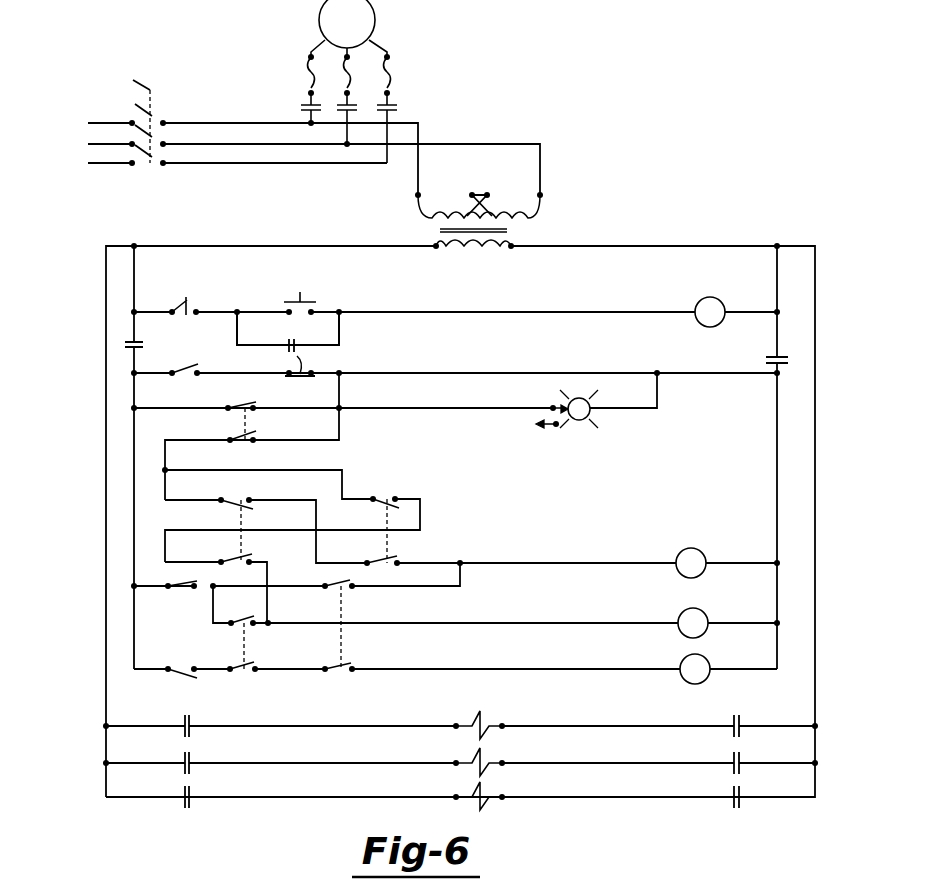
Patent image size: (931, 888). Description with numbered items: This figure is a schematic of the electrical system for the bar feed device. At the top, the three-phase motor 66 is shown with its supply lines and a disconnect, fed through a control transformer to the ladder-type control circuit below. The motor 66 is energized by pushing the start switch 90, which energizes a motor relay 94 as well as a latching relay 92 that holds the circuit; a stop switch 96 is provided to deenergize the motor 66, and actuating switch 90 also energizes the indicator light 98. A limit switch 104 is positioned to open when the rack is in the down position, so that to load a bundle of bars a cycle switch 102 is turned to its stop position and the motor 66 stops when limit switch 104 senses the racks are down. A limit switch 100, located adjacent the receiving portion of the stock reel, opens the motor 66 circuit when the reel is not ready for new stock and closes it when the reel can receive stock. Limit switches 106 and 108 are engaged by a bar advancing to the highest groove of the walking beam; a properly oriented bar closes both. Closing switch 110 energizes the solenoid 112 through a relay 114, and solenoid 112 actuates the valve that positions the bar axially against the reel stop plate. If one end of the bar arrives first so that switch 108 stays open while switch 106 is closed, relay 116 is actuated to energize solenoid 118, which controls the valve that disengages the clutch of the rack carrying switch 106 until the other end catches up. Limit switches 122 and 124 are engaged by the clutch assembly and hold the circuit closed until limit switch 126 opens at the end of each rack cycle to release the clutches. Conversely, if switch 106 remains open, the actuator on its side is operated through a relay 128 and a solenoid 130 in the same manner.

The motor 66 is at (375, 22).
The switch 90 is at (310, 292).
The latching relay 92 is at (721, 301).
The motor relay 94 is at (366, 331).
The stop switch 96 is at (190, 302).
The light 98 is at (572, 426).
The limit switch 100 is at (186, 369).
The cycle switch 102 is at (296, 378).
The limit switch 104 is at (252, 416).
The limit switch 106 is at (263, 478).
The limit switch 108 is at (389, 487).
The switch 110 is at (183, 666).
The solenoid 112 is at (485, 811).
The relay 114 is at (707, 658).
The relay 116 is at (702, 552).
The solenoid 118 is at (483, 712).
The limit switch 122 is at (343, 643).
The limit switch 124 is at (252, 649).
The limit switch 126 is at (172, 590).
The relay 128 is at (704, 612).
The solenoid 130 is at (483, 750).